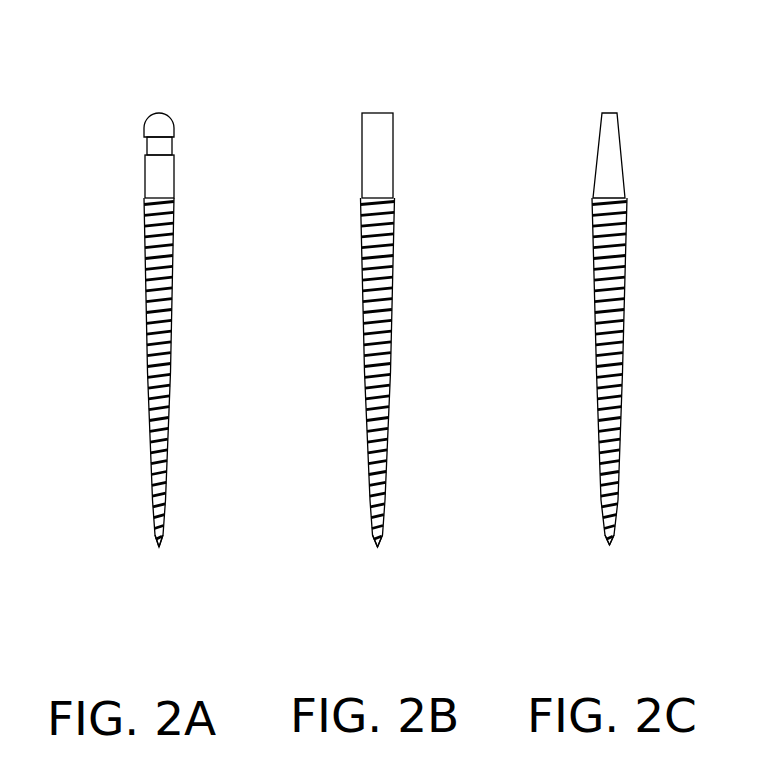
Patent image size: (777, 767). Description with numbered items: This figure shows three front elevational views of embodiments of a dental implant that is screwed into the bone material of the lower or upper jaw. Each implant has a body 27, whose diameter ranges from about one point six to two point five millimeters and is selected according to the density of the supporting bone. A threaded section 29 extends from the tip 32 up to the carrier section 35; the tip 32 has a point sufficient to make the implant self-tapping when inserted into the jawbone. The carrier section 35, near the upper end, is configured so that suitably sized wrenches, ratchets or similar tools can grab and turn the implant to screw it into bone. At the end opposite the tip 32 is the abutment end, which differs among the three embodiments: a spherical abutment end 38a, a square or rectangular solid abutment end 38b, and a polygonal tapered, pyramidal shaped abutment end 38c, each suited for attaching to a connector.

In FIG. 2A, the spherical abutment end 38a is at (196, 108).
In FIG. 2B, the square or rectangular solid abutment end 38b is at (410, 108).
In FIG. 2C, the pyramidal shaped abutment end 38c is at (642, 108).
In FIG. 2A, the body 27 is at (194, 184).
In FIG. 2B, the body 27 is at (412, 185).
In FIG. 2C, the body 27 is at (642, 185).
In FIG. 2A, the threaded section 29 is at (122, 547).
In FIG. 2B, the threaded section 29 is at (341, 547).
In FIG. 2C, the threaded section 29 is at (573, 545).
In FIG. 2A, the tip 32 is at (160, 547).
In FIG. 2B, the tip 32 is at (378, 547).
In FIG. 2C, the tip 32 is at (611, 545).
In FIG. 2A, the carrier section 35 is at (122, 198).
In FIG. 2B, the carrier section 35 is at (341, 197).
In FIG. 2C, the carrier section 35 is at (573, 197).